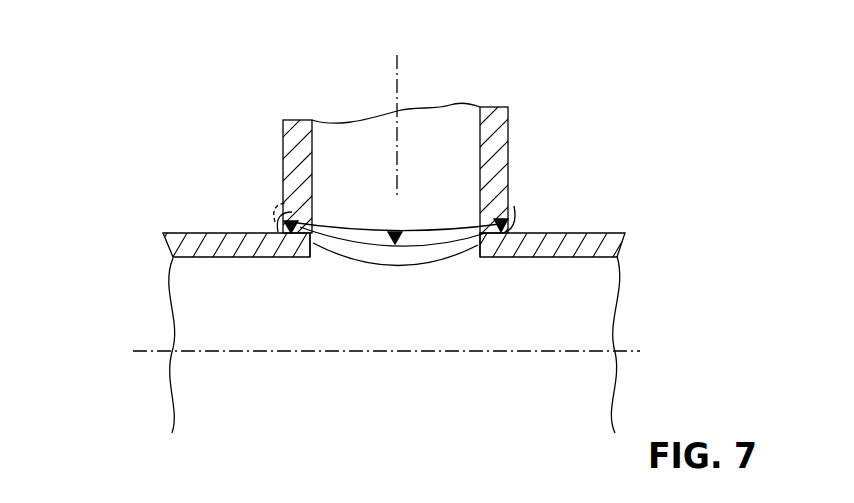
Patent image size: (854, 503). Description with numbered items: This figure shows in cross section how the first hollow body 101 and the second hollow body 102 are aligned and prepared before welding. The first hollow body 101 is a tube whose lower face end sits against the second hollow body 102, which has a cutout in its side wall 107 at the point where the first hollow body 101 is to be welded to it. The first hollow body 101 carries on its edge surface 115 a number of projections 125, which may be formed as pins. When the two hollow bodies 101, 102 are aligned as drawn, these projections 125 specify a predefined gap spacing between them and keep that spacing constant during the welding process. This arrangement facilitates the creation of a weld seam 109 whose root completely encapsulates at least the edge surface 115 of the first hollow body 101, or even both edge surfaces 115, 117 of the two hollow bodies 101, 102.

The first hollow body 101 is at (296, 91).
The second hollow body 102 is at (130, 286).
The side wall 107 is at (297, 143).
The weld seam 109 is at (280, 222).
The edge surface 115 is at (500, 224).
The edge surface 117 is at (481, 243).
The projections 125 is at (486, 233).